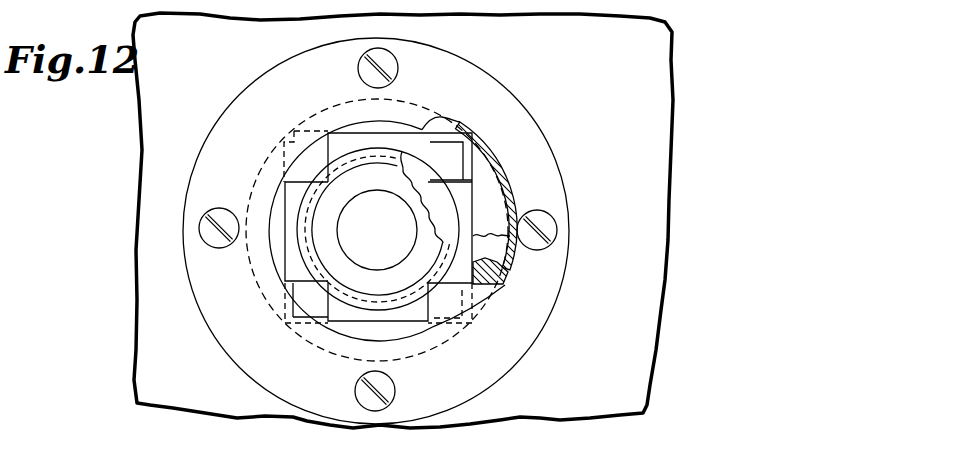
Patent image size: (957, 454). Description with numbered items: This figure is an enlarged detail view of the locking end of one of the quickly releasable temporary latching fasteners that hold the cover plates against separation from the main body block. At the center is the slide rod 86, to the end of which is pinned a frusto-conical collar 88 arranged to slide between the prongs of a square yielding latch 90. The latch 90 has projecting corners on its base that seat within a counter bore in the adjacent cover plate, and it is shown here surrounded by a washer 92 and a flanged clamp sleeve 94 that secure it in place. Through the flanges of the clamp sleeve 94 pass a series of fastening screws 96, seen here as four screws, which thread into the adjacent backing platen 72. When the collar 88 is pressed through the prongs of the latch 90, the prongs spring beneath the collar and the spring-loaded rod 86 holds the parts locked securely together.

The backing platen 72 is at (652, 205).
The slide rod 86 is at (388, 257).
The frusto-conical collar 88 is at (428, 182).
The square yielding latch 90 is at (473, 163).
The washer 92 is at (508, 275).
The flanged clamp sleeve 94 is at (523, 347).
The fastening screws 96 is at (360, 388).